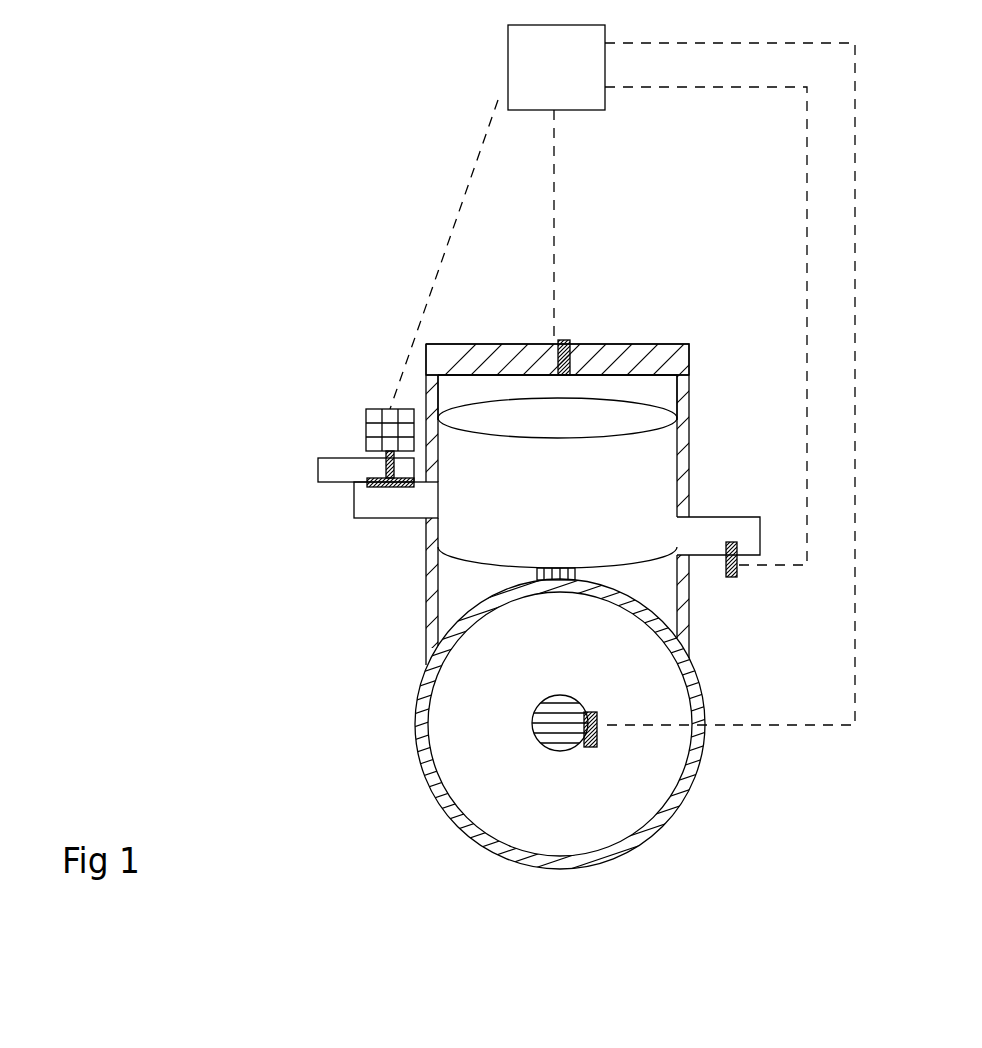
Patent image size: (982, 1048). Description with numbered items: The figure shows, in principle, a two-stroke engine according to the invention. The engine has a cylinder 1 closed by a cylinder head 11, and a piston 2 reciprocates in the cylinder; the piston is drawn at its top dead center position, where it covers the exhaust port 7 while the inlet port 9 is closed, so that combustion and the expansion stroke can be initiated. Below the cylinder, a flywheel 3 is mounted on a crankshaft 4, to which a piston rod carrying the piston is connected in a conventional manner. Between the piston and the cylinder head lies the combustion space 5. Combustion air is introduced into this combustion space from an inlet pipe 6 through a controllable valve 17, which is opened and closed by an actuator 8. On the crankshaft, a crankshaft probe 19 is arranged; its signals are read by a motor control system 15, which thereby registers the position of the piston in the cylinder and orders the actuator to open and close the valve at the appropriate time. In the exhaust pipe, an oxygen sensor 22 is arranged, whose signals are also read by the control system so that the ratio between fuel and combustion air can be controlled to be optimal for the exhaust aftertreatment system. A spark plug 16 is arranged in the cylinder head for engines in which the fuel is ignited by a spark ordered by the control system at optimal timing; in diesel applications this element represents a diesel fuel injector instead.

The cylinder 1 is at (425, 590).
The piston 2 is at (497, 422).
The flywheel 3 is at (452, 686).
The crankshaft 4 is at (532, 725).
The combustion space 5 is at (595, 388).
The inlet pipe 6 is at (318, 465).
The exhaust port 7 is at (682, 537).
The actuator 8 is at (366, 421).
The inlet port 9 is at (427, 500).
The cylinder head 11 is at (640, 345).
The motor control system 15 is at (508, 88).
The spark plug 16 is at (562, 340).
The controllable valve 17 is at (353, 487).
The crankshaft probe 19 is at (599, 724).
The oxygen sensor 22 is at (737, 565).